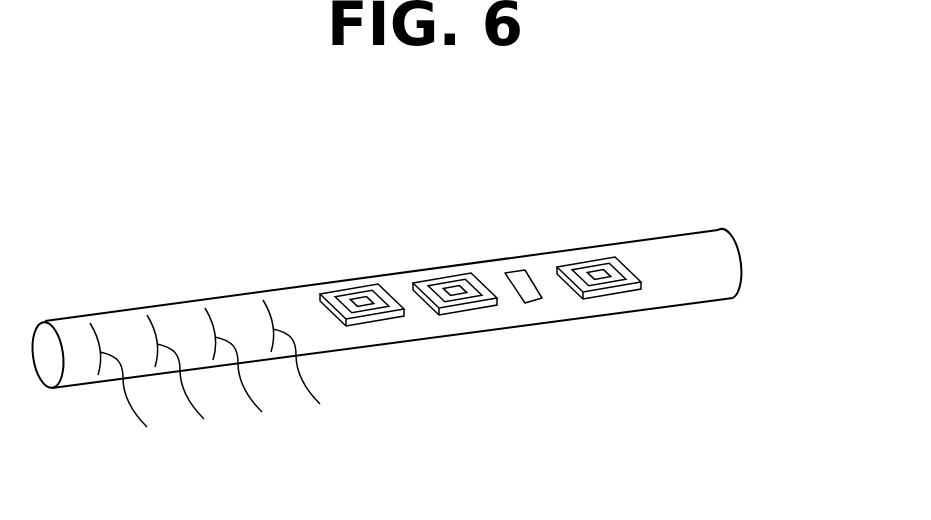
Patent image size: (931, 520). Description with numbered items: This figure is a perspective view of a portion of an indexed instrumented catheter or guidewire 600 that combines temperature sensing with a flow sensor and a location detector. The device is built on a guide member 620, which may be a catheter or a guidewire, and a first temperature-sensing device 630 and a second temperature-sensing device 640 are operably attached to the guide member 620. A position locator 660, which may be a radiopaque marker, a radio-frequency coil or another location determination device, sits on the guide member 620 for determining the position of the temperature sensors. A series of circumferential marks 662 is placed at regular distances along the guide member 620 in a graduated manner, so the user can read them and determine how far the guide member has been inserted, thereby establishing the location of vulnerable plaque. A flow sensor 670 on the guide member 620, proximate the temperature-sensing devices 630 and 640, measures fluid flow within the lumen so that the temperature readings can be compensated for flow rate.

The indexed instrumented catheter or guidewire 600 is at (80, 176).
The guide member 620 is at (281, 290).
The first temperature-sensing device 630 is at (625, 292).
The second temperature-sensing device 640 is at (387, 320).
The position locator 660 is at (516, 270).
The marks 662 is at (219, 380).
The flow sensor 670 is at (483, 307).